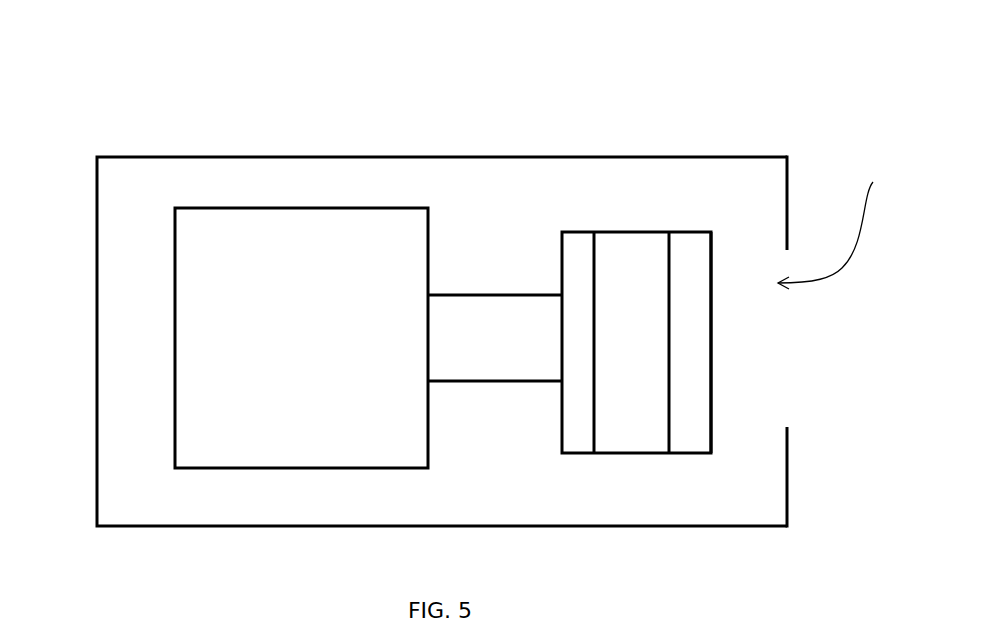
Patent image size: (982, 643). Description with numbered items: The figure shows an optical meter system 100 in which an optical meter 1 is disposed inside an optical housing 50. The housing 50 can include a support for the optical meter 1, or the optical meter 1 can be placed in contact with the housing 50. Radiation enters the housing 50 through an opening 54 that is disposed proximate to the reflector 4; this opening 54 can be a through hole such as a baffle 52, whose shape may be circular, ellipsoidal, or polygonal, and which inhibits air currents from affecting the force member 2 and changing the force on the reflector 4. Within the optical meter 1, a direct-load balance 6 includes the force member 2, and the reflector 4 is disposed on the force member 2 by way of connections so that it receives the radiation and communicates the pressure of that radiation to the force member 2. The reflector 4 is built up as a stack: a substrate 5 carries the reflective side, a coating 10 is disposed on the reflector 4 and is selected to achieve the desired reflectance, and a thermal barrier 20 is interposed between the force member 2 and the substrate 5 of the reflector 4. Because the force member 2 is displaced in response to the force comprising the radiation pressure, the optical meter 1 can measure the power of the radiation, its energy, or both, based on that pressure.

The optical meter system 100 is at (60, 98).
The optical housing 50 is at (195, 158).
The baffle 52 is at (788, 235).
The opening 54 is at (838, 223).
The optical meter 1 is at (421, 173).
The direct-load balance 6 is at (335, 260).
The force member 2 is at (479, 312).
The reflector 4 is at (636, 340).
The thermal barrier 20 is at (578, 245).
The substrate 5 is at (634, 245).
The coating 10 is at (677, 245).